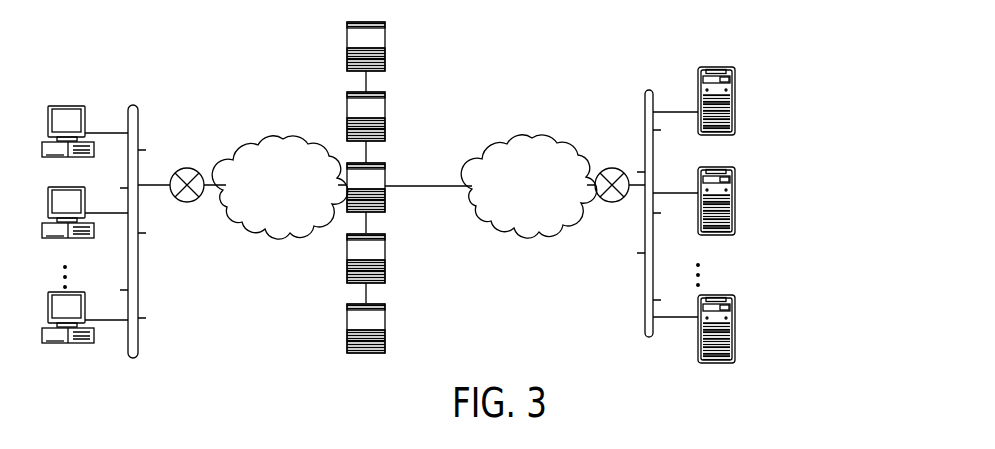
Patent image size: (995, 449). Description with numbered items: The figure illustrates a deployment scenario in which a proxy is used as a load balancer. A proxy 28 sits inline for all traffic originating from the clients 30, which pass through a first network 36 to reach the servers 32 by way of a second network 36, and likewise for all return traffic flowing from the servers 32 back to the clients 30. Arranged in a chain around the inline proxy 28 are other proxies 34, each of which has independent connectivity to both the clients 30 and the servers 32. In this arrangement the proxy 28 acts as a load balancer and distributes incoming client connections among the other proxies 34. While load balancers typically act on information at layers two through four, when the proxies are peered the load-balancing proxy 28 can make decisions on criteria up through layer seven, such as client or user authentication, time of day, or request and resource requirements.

The proxy 28 is at (408, 187).
The clients 30 is at (68, 242).
The servers 32 is at (721, 233).
The proxies 34 is at (417, 187).
The network 36 is at (404, 187).